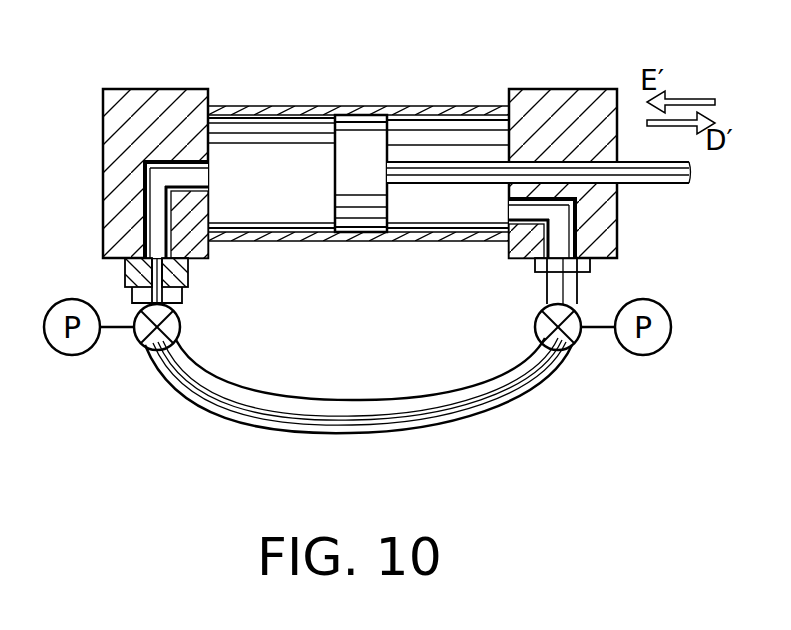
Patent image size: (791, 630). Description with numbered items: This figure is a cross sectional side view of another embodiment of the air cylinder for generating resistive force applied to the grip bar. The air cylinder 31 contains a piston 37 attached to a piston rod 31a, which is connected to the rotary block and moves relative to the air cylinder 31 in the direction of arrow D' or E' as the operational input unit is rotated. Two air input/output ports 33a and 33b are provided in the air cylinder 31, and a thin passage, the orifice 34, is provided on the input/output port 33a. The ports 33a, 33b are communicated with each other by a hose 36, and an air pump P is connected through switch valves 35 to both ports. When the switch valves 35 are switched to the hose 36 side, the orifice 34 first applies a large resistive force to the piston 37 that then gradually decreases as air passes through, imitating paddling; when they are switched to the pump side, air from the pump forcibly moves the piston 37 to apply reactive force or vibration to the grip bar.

The air cylinder 31 is at (306, 82).
The piston rod 31a is at (660, 184).
The input/output port 33a is at (159, 248).
The input/output port 33b is at (565, 248).
The orifice 34 is at (125, 283).
The switch valve 35 is at (182, 332).
The hose 36 is at (368, 415).
The piston 37 is at (374, 125).